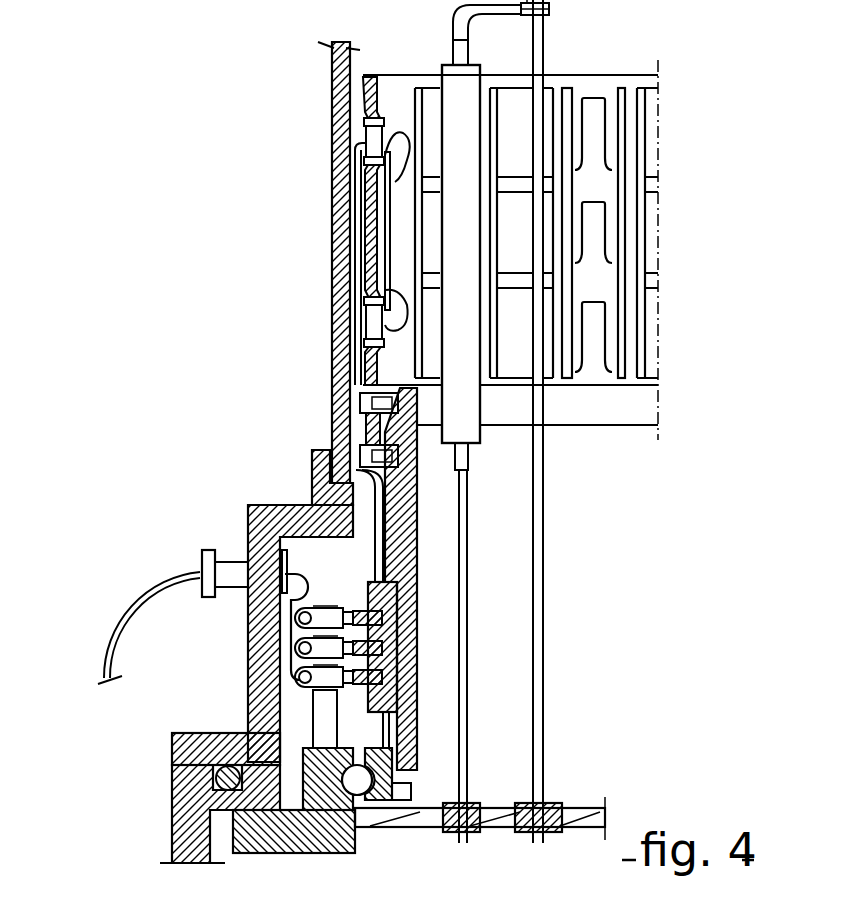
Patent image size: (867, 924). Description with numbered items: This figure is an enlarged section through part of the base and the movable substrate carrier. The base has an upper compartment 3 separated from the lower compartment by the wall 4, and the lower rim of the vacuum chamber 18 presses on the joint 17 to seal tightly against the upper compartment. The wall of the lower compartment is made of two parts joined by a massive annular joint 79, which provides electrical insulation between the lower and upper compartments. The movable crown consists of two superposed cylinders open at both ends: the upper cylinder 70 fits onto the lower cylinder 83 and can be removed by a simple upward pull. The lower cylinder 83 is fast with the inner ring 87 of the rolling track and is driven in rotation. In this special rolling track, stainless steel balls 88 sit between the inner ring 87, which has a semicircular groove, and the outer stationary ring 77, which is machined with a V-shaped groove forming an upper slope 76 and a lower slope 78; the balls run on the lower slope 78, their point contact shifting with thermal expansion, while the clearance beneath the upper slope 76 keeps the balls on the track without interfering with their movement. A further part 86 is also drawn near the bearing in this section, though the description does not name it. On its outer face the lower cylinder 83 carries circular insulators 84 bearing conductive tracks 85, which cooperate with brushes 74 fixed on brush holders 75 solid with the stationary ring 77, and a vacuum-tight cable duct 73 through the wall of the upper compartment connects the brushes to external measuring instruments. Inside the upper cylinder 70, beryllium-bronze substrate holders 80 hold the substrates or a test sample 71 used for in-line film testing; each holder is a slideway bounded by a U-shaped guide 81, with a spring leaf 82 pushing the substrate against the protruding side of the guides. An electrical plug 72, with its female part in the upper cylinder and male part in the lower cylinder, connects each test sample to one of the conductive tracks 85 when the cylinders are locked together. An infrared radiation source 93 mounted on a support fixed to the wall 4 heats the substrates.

The upper compartment 3 is at (312, 453).
The wall 4 is at (185, 830).
The joint 17 is at (365, 418).
The vacuum chamber 18 is at (340, 128).
The upper cylinder 70 is at (370, 200).
The test sample 71 is at (392, 232).
The electrical plug 72 is at (368, 423).
The vacuum-tight cable duct 73 is at (305, 513).
The brushes 74 is at (330, 550).
The brush holders 75 is at (198, 575).
The upper slope 76 is at (308, 586).
The outer stationary ring 77 is at (322, 650).
The lower slope 78 is at (240, 755).
The massive annular joint 79 is at (225, 785).
The substrate holders 80 is at (650, 220).
The guide 81 is at (622, 295).
The spring leaf 82 is at (592, 355).
The lower cylinder 83 is at (400, 553).
The circular insulators 84 is at (395, 597).
The conductive tracks 85 is at (358, 680).
The bearing block 86 is at (360, 750).
The inner ring 87 is at (368, 782).
The stainless steel balls 88 is at (405, 790).
The infrared radiation source 93 is at (458, 117).